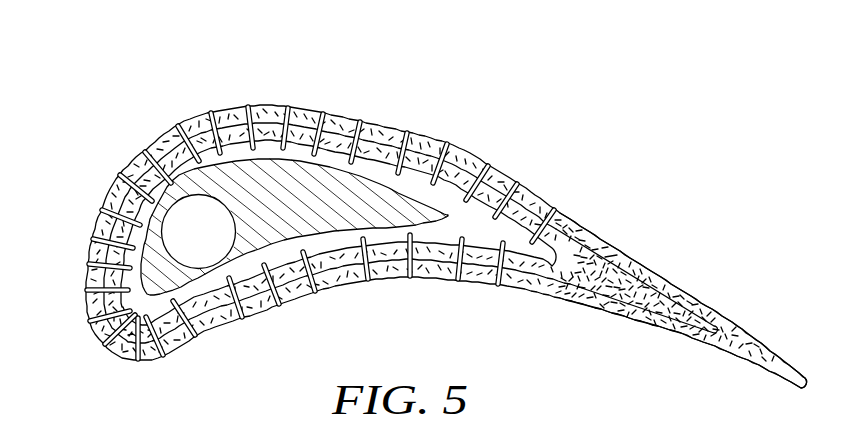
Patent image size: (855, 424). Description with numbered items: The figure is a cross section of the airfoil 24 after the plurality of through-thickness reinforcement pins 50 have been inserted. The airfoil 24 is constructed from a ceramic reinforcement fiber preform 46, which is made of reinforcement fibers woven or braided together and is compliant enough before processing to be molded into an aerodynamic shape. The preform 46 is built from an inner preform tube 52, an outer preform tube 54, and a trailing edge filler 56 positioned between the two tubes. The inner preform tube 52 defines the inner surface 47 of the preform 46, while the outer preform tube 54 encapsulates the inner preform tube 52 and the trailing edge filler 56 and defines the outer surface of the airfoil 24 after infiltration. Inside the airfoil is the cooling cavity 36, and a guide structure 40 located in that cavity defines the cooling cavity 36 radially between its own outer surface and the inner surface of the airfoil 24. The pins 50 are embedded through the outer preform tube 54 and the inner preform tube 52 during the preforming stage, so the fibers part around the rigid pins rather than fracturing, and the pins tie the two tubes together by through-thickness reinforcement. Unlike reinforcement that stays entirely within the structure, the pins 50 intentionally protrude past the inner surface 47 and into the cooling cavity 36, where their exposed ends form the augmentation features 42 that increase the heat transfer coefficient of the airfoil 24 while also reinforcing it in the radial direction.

The airfoil 24 is at (662, 423).
The cooling cavity 36 is at (160, 190).
The guide structure 40 is at (99, 222).
The augmentation features 42 is at (405, 195).
The ceramic reinforcement fiber preform 46 is at (558, 196).
The inner surface of the ceramic reinforcement fiber preform 47 is at (513, 184).
The through-thickness reinforcement pins 50 is at (373, 119).
The inner preform tube 52 is at (203, 132).
The outer preform tube 54 is at (227, 110).
The trailing edge filler 56 is at (610, 258).